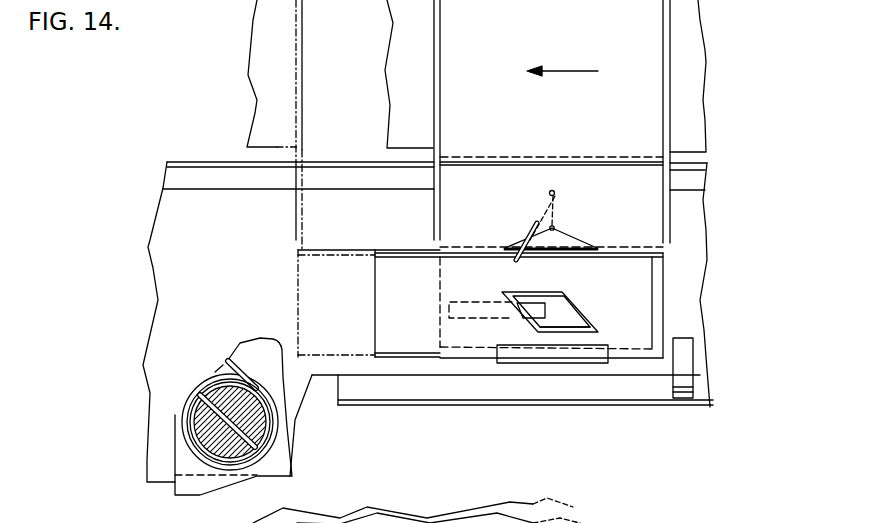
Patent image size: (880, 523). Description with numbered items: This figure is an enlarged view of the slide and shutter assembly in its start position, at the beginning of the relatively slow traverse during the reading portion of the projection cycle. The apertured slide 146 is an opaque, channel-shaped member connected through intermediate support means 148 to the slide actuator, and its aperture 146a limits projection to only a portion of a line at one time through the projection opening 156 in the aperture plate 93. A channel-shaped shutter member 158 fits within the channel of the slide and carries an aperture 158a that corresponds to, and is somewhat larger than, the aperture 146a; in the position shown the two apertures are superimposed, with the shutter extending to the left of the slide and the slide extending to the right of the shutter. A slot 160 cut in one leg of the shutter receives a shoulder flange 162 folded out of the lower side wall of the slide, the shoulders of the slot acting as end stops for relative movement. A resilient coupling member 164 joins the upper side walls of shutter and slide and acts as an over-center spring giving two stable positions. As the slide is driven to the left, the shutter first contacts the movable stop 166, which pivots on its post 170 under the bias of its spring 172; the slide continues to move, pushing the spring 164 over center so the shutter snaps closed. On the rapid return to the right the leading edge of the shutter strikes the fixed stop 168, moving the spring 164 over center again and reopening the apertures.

The aperture plate 93 is at (697, 266).
The apertured slide 146 is at (660, 310).
The aperture 146a is at (562, 301).
The intermediate support means 148 is at (655, 117).
The projection opening 156 is at (467, 300).
The shutter member 158 is at (380, 314).
The aperture 158a is at (585, 315).
The slot 160 is at (453, 360).
The shoulder flange 162 is at (553, 360).
The coupling member 164 is at (556, 210).
The movable stop 166 is at (247, 355).
The fixed stop 168 is at (693, 342).
The post 170 is at (205, 425).
The spring 172 is at (203, 387).